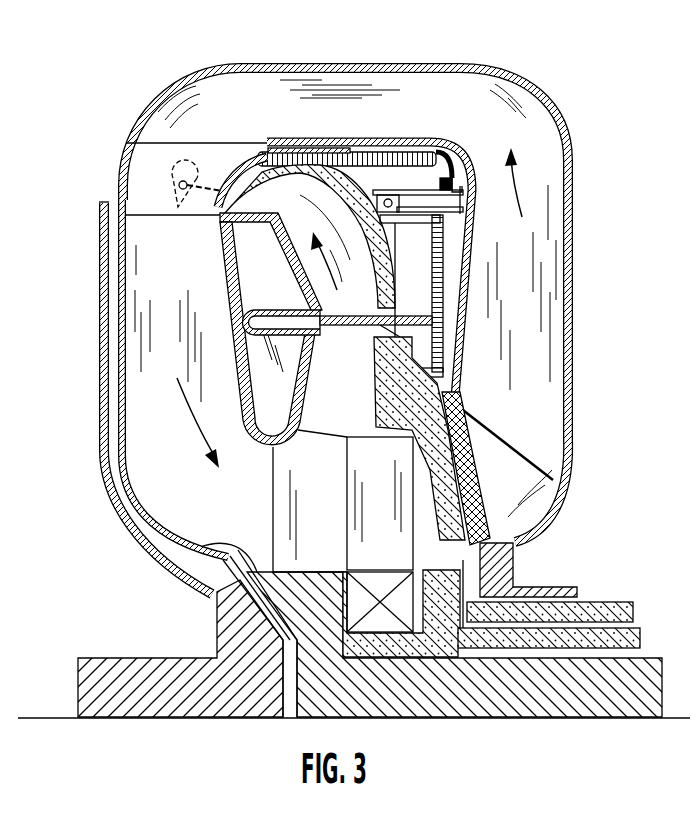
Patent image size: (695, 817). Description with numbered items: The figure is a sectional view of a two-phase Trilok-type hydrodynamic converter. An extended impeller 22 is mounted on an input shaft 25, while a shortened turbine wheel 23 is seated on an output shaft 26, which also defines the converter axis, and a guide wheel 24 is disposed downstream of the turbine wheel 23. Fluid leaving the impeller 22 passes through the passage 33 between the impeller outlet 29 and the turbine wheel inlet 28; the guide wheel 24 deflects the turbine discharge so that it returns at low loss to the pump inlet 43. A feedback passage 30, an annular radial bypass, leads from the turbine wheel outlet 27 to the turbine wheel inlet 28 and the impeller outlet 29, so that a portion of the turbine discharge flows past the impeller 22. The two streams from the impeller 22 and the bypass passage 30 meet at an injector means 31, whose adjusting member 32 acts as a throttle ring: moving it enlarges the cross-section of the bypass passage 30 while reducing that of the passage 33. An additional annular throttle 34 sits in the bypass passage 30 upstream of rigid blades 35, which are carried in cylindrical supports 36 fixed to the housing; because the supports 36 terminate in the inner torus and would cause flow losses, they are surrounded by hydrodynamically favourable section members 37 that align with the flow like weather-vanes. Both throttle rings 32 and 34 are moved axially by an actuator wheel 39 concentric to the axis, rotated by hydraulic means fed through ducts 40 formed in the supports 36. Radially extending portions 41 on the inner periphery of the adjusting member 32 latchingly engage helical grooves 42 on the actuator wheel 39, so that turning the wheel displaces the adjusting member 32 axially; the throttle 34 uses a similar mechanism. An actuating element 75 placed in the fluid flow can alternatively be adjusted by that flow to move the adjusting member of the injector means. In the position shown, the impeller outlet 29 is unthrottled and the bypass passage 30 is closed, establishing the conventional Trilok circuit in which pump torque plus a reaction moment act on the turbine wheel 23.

The impeller 22 is at (520, 308).
The turbine wheel 23 is at (163, 432).
The guide wheel 24 is at (217, 560).
The input shaft 25 is at (577, 593).
The output shaft 26 is at (628, 718).
The turbine wheel outlet 27 is at (260, 507).
The turbine wheel inlet 28 is at (137, 212).
The impeller outlet 29 is at (170, 143).
The feedback passage 30 is at (303, 237).
The injector means 31 is at (212, 152).
The adjusting member 32 is at (256, 150).
The passage 33 is at (152, 177).
The annular throttle 34 is at (245, 324).
The blades 35 is at (502, 250).
The supports 36 is at (487, 533).
The section members 37 is at (550, 492).
The actuator wheel 39 is at (443, 303).
The ducts 40 is at (473, 570).
The radially extending portions 41 is at (447, 182).
The helical grooves 42 is at (440, 165).
The pump inlet 43 is at (497, 437).
The actuating element 75 is at (170, 166).